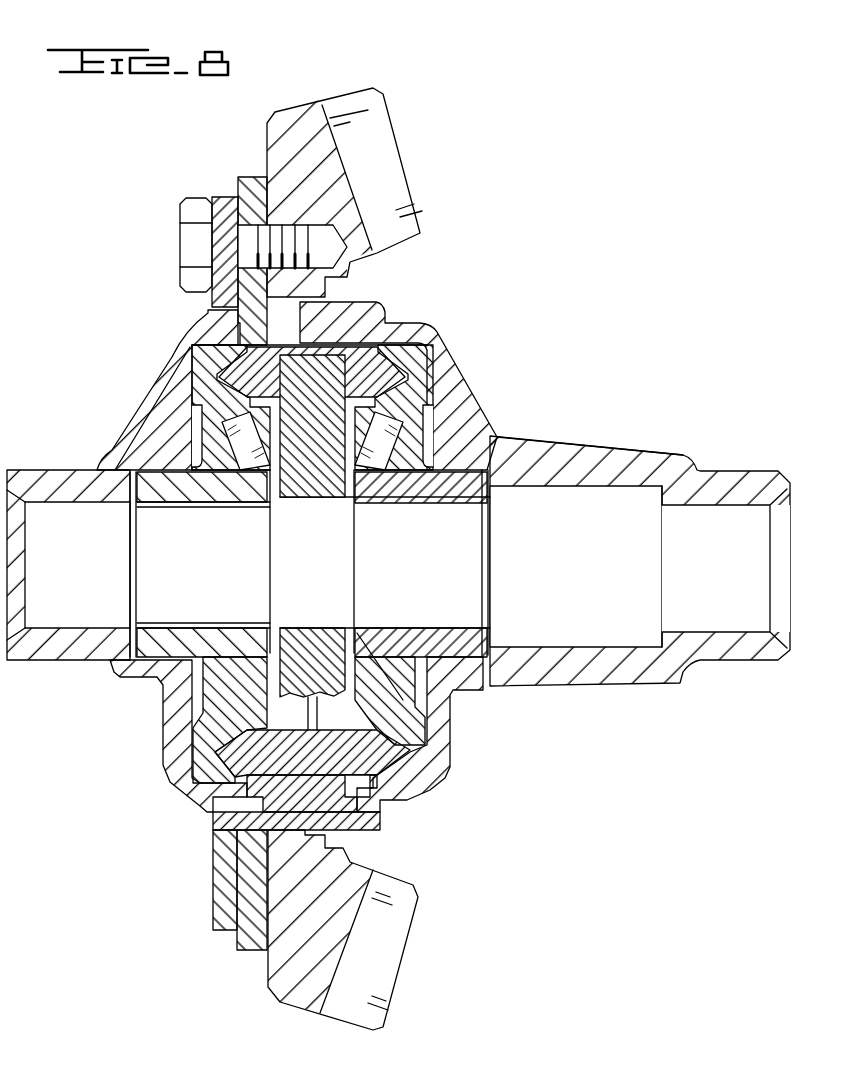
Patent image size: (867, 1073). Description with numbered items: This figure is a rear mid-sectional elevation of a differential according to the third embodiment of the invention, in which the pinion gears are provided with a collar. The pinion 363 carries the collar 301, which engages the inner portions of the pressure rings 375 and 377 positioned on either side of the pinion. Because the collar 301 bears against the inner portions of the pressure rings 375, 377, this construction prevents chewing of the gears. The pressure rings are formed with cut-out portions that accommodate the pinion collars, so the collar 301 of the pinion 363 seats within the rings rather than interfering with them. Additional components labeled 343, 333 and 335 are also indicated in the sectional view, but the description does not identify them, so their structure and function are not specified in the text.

The collar 301 is at (363, 400).
The pinion 363 is at (267, 428).
The pinion shaft 343 is at (326, 563).
The thrust washer 333 is at (210, 727).
The thrust washer 335 is at (413, 728).
The pressure ring 375 is at (277, 802).
The pressure ring 377 is at (347, 800).